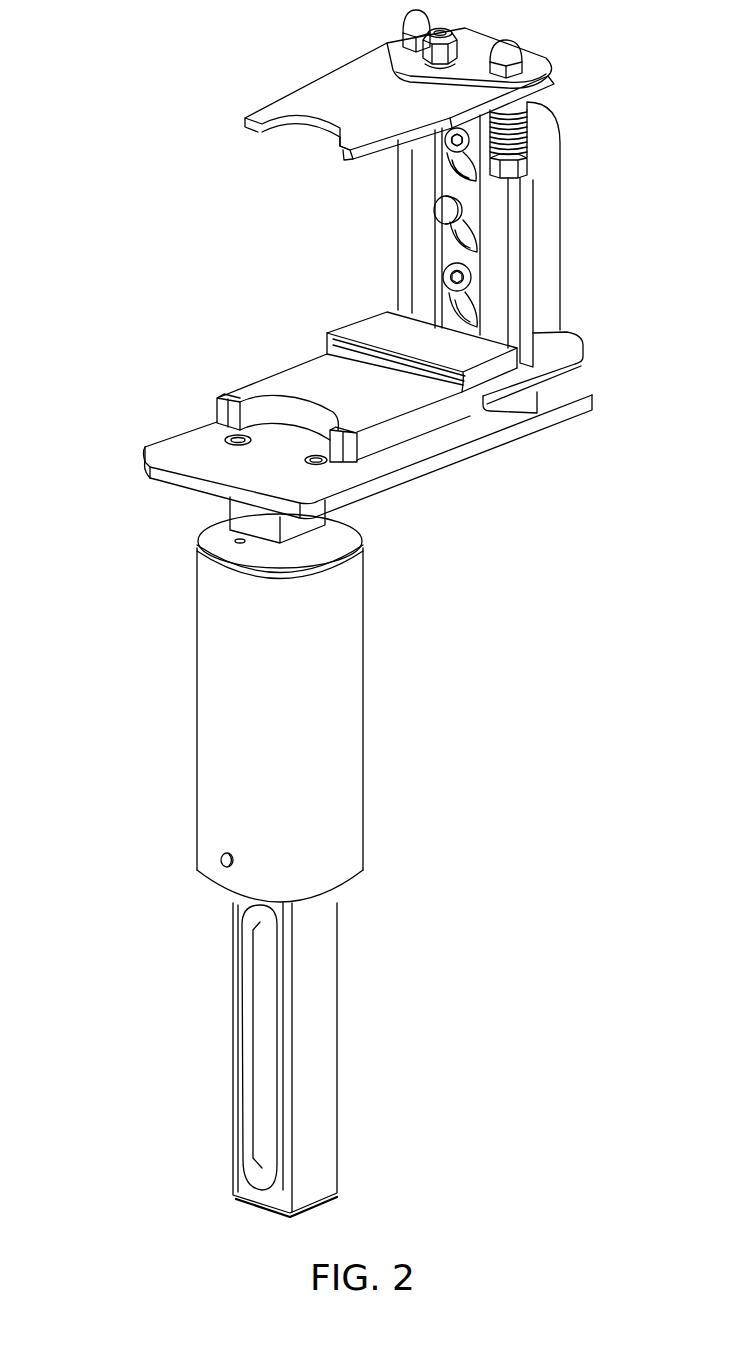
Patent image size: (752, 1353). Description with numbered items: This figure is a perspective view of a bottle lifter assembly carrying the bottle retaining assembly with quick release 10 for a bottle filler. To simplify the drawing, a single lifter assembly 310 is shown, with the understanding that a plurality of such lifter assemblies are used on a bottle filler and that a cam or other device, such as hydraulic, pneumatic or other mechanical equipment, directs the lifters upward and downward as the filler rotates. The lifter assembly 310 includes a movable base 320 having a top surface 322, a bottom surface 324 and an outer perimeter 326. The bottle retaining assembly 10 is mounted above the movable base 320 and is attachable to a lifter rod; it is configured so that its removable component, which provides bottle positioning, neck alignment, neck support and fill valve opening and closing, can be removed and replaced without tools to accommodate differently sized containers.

The bottle retaining assembly with quick release 10 is at (590, 99).
The lifter assembly 310 is at (190, 1040).
The movable base 320 is at (309, 607).
The top surface 322 is at (193, 437).
The bottom surface 324 is at (430, 458).
The outer perimeter 326 is at (183, 478).